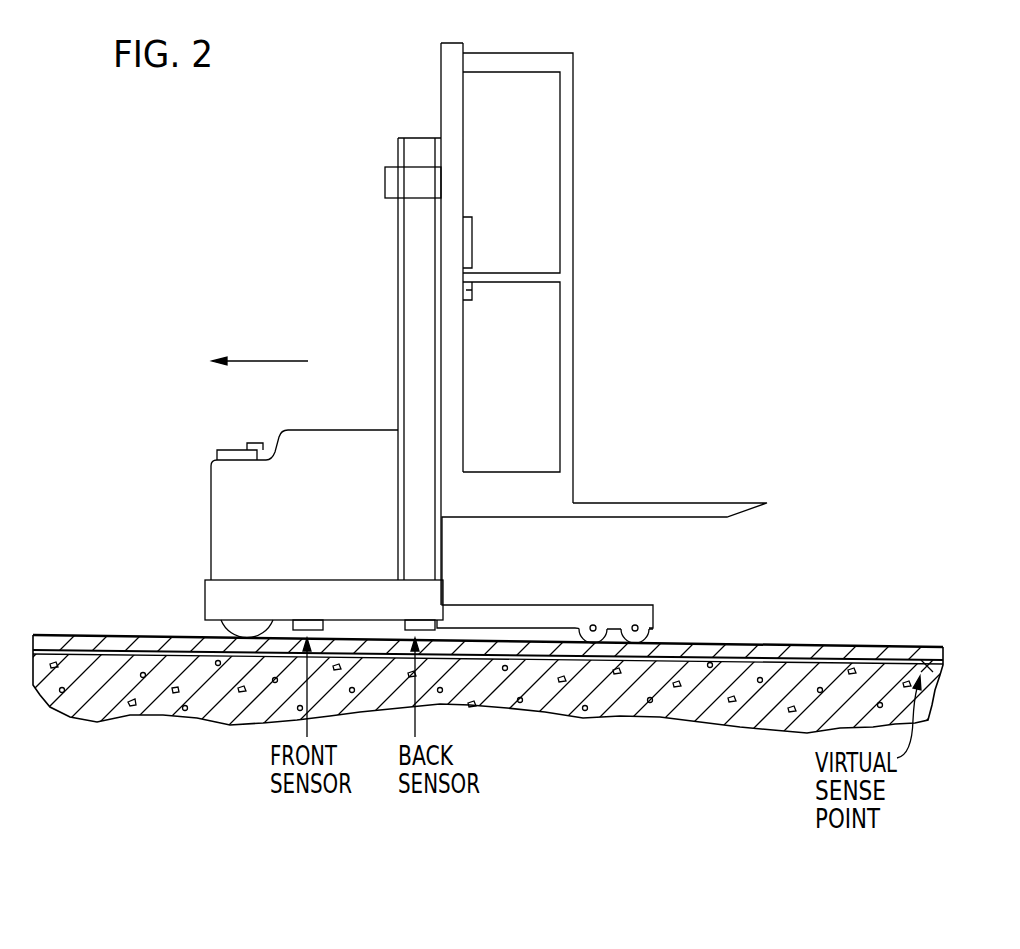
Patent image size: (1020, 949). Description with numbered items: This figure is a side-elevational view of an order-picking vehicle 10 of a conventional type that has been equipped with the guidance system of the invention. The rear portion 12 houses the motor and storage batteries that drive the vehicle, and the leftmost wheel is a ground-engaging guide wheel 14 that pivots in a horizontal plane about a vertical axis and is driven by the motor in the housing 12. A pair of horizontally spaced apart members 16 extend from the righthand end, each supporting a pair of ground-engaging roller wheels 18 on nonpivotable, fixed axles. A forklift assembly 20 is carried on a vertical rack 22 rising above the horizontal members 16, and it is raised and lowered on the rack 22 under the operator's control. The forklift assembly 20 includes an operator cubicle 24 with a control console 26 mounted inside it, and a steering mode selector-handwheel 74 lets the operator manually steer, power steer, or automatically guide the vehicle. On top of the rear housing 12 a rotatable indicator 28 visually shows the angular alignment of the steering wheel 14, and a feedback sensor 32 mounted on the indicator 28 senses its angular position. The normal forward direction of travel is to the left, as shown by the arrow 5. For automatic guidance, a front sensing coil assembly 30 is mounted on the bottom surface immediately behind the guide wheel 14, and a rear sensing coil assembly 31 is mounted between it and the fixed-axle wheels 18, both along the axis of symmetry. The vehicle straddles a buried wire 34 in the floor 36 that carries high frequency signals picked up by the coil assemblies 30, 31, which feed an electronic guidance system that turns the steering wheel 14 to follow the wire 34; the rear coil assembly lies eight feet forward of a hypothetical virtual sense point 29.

The arrow 5 is at (268, 361).
The order-picking vehicle 10 is at (326, 523).
The rear portion 12 is at (226, 487).
The ground-engaging guide wheel 14 is at (220, 636).
The horizontally spaced apart members 16 is at (588, 617).
The ground-engaging roller wheels 18 is at (600, 637).
The forklift assembly 20 is at (678, 503).
The vertical rack 22 is at (398, 330).
The operator cubicle 24 is at (572, 313).
The control console 26 is at (479, 240).
The rotatable indicator 28 is at (226, 450).
The virtual sense point 29 is at (930, 636).
The front sensing coil assembly 30 is at (293, 631).
The rear sensing coil assembly 31 is at (446, 608).
The feedback sensor 32 is at (258, 443).
The buried wire 34 is at (697, 660).
The floor 36 is at (775, 648).
The steering mode selector-handwheel 74 is at (473, 263).